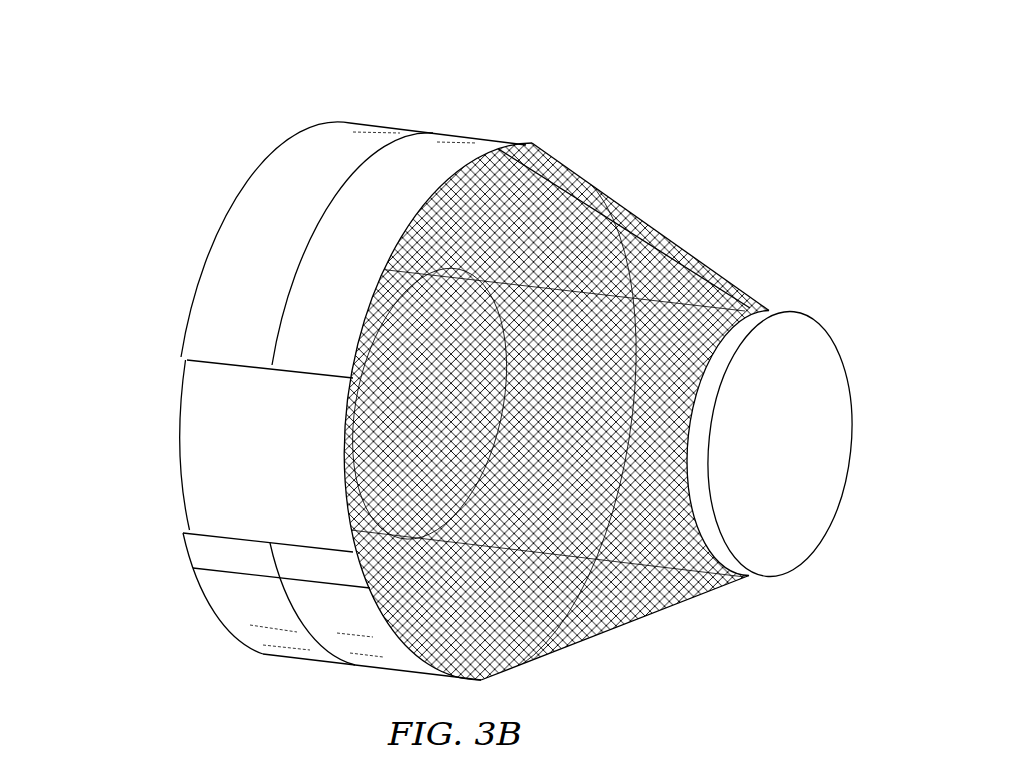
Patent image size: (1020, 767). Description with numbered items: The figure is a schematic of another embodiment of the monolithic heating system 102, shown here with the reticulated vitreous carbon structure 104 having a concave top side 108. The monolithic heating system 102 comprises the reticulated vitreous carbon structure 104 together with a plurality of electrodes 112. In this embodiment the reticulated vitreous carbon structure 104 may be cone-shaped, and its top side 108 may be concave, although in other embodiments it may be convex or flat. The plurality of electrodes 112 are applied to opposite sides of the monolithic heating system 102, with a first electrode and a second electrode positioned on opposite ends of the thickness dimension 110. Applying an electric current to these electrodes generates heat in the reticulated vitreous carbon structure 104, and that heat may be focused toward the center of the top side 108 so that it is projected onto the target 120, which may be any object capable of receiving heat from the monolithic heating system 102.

The monolithic heating system 102 is at (172, 163).
The reticulated vitreous carbon structure 104 is at (495, 132).
The top side 108 is at (550, 230).
The thickness dimension 110 is at (240, 310).
The plurality of electrodes 112 is at (227, 447).
The target 120 is at (802, 372).